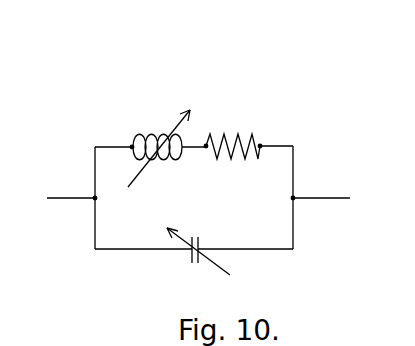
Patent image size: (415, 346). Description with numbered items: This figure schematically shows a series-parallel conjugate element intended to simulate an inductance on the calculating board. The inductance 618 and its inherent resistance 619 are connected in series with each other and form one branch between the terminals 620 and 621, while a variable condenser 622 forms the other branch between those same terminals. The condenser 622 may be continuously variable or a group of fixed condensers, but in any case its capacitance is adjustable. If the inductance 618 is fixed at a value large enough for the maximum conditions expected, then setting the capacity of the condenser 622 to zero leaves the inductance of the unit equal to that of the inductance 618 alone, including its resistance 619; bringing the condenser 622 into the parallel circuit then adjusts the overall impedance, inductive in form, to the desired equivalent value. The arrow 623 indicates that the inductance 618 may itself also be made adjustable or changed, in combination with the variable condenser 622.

The inductance 618 is at (150, 138).
The inherent resistance 619 is at (220, 133).
The terminal 620 is at (63, 198).
The terminal 621 is at (338, 196).
The variable condenser 622 is at (190, 255).
The arrow 623 is at (170, 132).